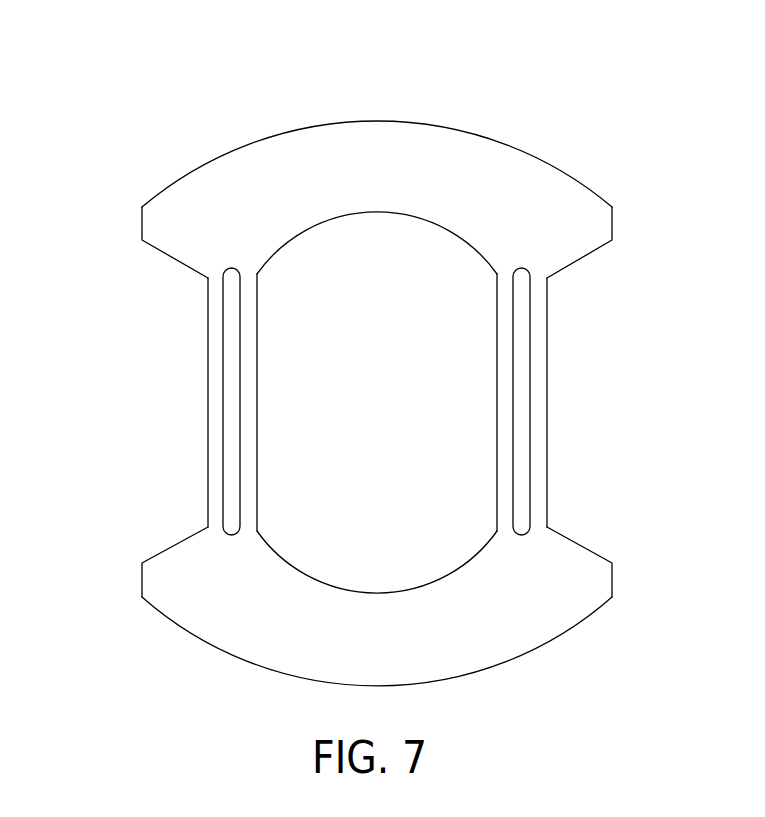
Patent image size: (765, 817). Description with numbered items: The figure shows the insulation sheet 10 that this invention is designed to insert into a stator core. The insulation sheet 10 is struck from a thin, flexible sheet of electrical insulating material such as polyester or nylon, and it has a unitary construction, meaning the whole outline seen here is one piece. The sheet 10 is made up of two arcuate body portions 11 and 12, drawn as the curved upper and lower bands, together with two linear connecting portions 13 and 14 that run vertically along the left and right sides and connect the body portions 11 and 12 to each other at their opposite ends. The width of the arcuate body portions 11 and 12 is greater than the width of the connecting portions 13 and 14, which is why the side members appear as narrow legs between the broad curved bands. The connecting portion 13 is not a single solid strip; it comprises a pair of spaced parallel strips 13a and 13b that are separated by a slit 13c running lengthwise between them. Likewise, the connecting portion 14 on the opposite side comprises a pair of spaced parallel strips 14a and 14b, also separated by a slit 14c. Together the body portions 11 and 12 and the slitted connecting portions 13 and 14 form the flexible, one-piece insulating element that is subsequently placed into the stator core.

The insulation sheet 10 is at (532, 138).
The arcuate body portion 11 is at (473, 132).
The arcuate body portion 12 is at (240, 643).
The linear connecting portion 13 is at (208, 340).
The strip 13a is at (208, 392).
The strip 13b is at (240, 434).
The slit 13c is at (228, 490).
The linear connecting portion 14 is at (547, 343).
The strip 14a is at (543, 388).
The strip 14b is at (513, 435).
The slit 14c is at (523, 490).